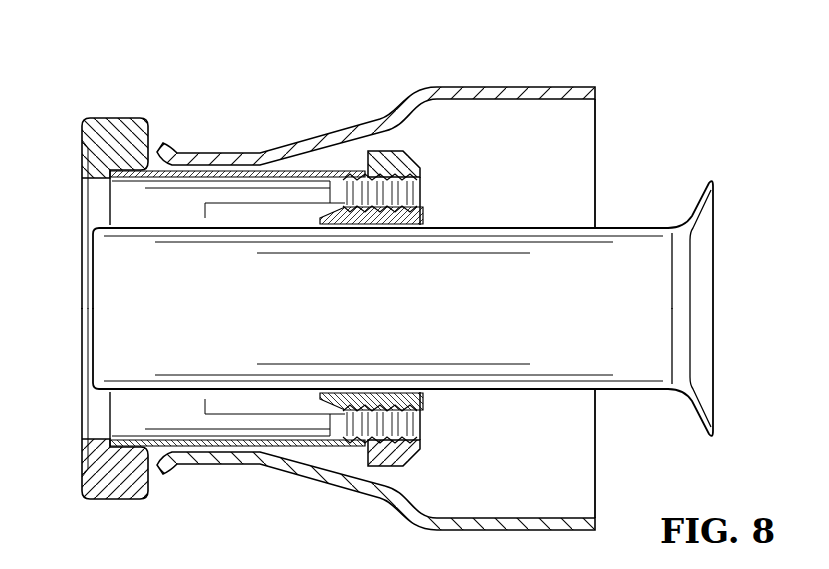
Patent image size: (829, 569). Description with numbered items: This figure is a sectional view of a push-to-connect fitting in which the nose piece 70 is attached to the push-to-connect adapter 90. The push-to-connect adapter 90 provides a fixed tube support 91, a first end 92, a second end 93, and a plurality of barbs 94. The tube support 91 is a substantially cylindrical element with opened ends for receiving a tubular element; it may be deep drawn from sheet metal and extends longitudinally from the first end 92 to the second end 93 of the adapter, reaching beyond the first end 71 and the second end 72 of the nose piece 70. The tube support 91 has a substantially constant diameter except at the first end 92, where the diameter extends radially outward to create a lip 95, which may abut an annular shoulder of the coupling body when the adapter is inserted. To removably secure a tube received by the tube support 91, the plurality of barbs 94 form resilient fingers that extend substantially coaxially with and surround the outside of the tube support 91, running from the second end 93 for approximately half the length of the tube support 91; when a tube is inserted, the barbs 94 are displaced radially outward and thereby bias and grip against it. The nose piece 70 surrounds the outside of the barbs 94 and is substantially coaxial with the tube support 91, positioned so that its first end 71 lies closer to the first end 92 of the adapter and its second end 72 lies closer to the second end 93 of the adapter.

The nose piece 70 is at (548, 86).
The first end 71 is at (595, 118).
The second end 72 is at (176, 143).
The push-to-connect adapter 90 is at (732, 103).
The tube support 91 is at (648, 391).
The first end 92 is at (714, 268).
The second end 93 is at (81, 383).
The plurality of barbs 94 is at (392, 135).
The lip 95 is at (698, 196).